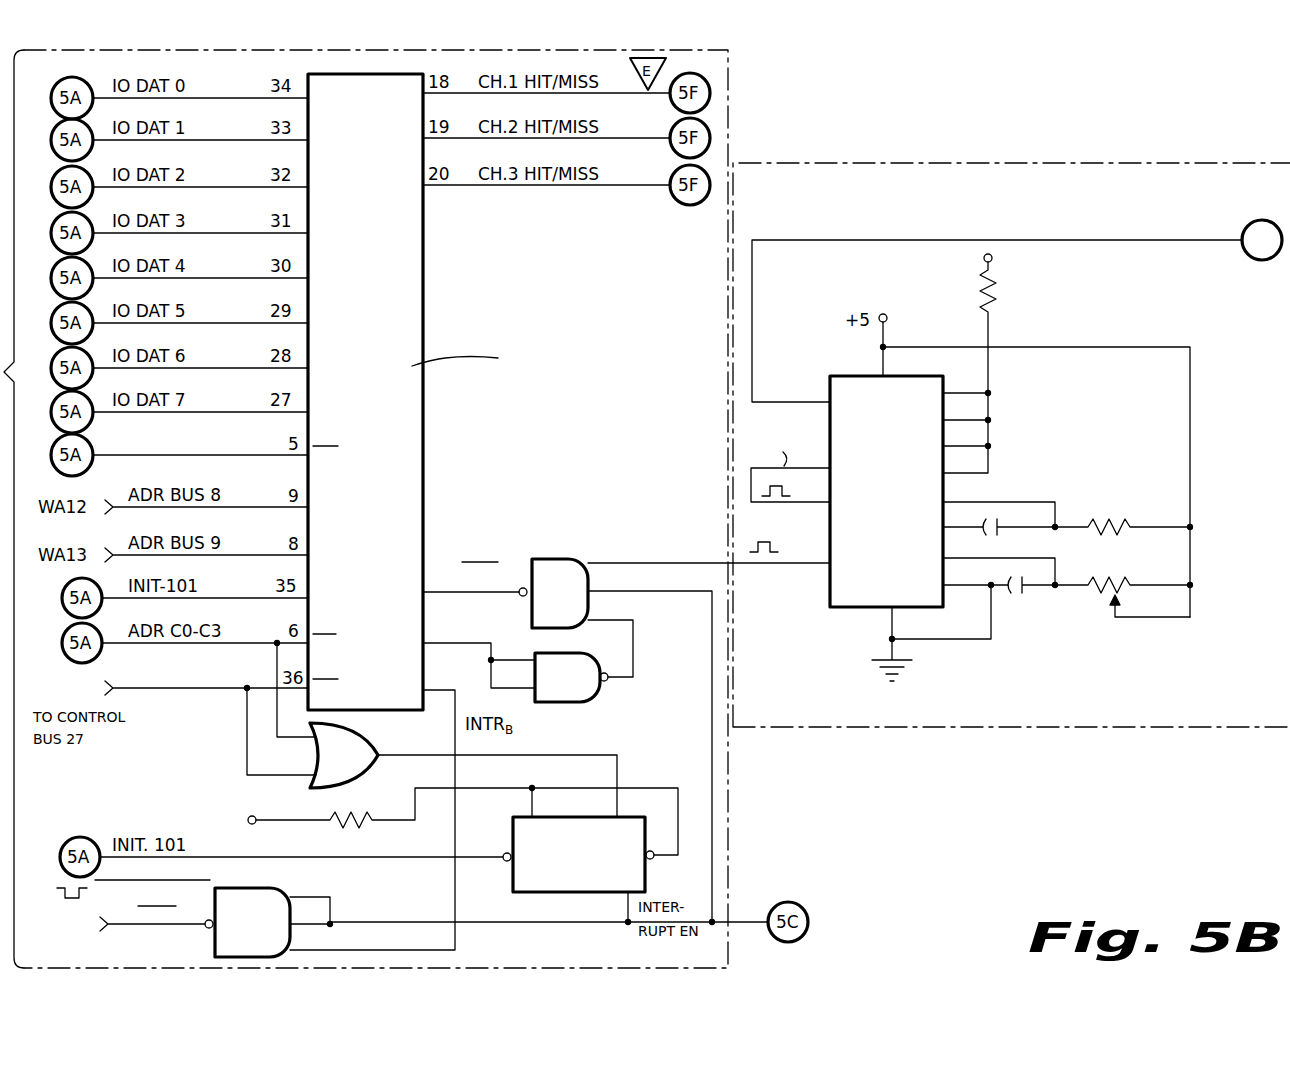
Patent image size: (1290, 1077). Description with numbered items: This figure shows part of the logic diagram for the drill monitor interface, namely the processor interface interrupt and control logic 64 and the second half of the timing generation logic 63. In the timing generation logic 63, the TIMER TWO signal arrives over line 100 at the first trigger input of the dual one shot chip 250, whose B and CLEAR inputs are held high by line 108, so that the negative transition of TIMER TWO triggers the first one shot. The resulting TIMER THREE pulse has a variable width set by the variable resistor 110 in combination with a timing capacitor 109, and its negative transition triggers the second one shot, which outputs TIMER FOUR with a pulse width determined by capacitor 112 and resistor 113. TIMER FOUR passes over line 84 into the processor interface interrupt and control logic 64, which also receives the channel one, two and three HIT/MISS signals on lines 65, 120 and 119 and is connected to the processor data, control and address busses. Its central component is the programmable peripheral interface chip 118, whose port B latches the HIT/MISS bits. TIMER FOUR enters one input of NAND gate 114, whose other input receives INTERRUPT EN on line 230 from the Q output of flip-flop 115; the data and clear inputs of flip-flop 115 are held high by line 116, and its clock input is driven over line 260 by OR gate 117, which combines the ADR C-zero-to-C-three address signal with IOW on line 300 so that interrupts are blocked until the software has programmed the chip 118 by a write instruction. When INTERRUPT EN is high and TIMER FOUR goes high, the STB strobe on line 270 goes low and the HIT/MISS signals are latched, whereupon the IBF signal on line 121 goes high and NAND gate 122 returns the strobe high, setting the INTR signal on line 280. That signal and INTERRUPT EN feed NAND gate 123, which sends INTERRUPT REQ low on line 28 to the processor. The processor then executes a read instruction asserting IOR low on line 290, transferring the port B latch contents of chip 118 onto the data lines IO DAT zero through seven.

The processor interface interrupt and control logic 64 is at (728, 78).
The timing generation logic 63 is at (1204, 199).
The CHANNEL 1 HIT/MISS line 65 is at (656, 96).
The CHANNEL 2 HIT/MISS line 120 is at (653, 141).
The CHANNEL 3 HIT/MISS line 119 is at (651, 188).
The IOR line 290 is at (197, 455).
The programmable peripheral interface chip 118 is at (423, 457).
The NAND gate 114 is at (560, 559).
The STB_B line 270 is at (492, 598).
The TIMER 4 line 84 is at (648, 566).
The IBF_B line 121 is at (488, 645).
The NAND gate 122 is at (572, 703).
The OR gate output line 260 is at (604, 755).
The INTERRUPT EN line 230 is at (712, 772).
The INTR_B line 280 is at (455, 770).
The OR gate 117 is at (374, 746).
The pull-up line 116 is at (420, 812).
The flip-flop 115 is at (570, 893).
The NAND gate 123 is at (262, 888).
The INTERRUPT REQ line 28 is at (128, 928).
The IOW line 300 is at (178, 690).
The TIMER 2 line 100 is at (962, 240).
The 74LS123 one shot chip 250 is at (860, 376).
The pull-up line 108 is at (988, 383).
The capacitor 112 is at (1000, 522).
The resistor 113 is at (1116, 520).
The variable resistor 110 is at (1116, 580).
The timing capacitor 109 is at (1028, 598).